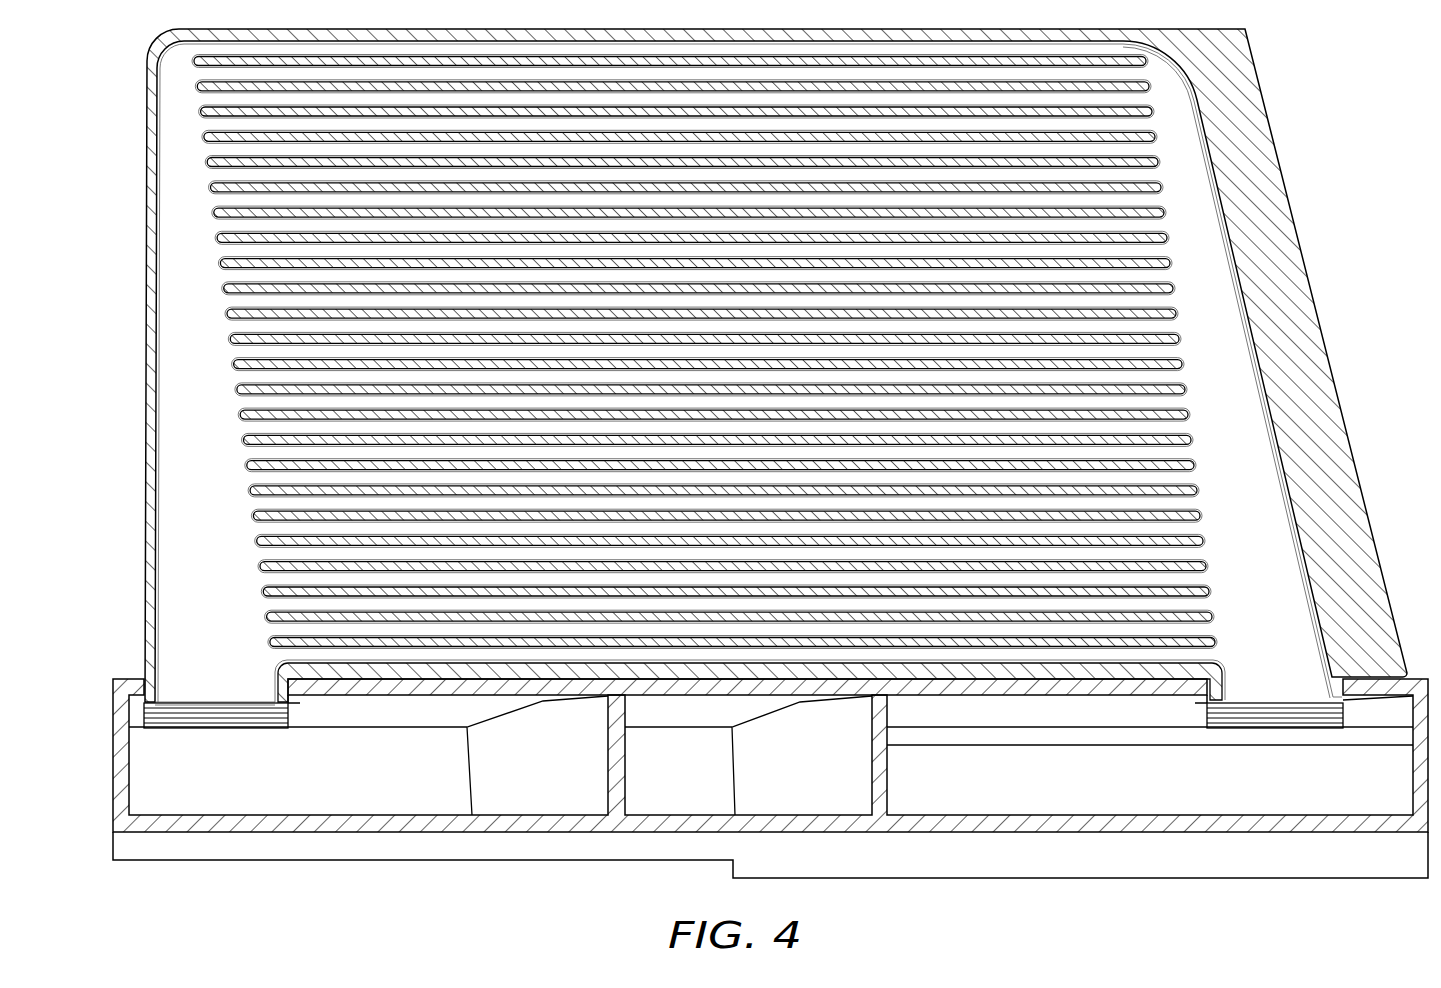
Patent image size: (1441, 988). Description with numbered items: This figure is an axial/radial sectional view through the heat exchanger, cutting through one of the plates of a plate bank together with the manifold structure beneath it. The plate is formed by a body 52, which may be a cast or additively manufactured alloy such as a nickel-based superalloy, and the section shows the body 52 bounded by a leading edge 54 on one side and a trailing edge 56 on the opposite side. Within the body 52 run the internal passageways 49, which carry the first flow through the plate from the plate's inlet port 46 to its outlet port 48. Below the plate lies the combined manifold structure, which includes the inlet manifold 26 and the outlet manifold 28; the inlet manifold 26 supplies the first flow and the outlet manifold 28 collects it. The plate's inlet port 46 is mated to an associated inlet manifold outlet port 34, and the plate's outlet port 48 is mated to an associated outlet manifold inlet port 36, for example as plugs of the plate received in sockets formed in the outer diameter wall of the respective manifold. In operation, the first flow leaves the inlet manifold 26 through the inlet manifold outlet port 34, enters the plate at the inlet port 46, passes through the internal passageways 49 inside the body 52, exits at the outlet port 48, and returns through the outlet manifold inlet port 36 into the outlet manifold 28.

The inlet manifold 26 is at (1147, 847).
The outlet manifold 28 is at (291, 783).
The inlet manifold outlet port 34 is at (1190, 707).
The outlet manifold inlet port 36 is at (302, 707).
The inlet port 46 is at (1283, 707).
The outlet port 48 is at (222, 710).
The internal passageways 49 is at (1172, 181).
The body 52 is at (152, 580).
The leading edge 54 is at (147, 275).
The trailing edge 56 is at (1305, 272).